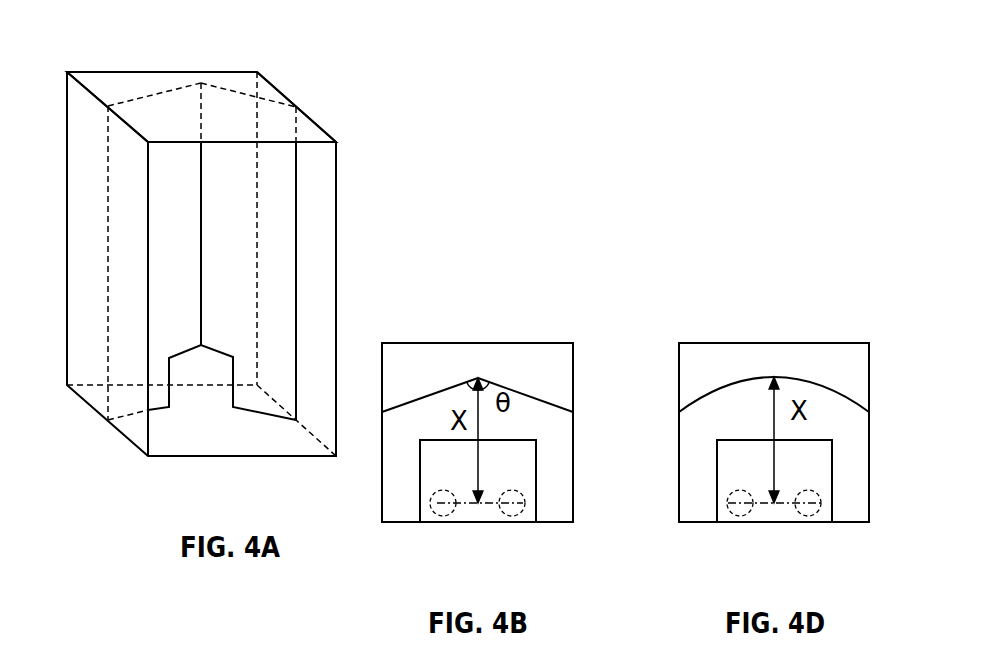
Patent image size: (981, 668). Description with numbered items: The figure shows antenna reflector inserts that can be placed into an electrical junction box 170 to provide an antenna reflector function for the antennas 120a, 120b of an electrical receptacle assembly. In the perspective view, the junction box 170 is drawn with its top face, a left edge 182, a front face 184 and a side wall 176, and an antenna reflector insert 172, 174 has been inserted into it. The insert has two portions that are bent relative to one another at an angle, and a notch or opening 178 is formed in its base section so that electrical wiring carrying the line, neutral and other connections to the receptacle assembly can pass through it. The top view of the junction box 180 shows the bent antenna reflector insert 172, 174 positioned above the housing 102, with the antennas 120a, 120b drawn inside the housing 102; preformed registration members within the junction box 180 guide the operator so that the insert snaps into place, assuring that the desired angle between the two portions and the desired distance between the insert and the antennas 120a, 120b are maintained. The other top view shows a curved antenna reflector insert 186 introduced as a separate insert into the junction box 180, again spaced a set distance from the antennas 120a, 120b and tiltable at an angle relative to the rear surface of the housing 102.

In FIG. 4A, the junction box 170 is at (345, 50).
In FIG. 4A, the antenna reflector insert (first portion) 172 is at (145, 97).
In FIG. 4B, the antenna reflector insert (first portion) 172 is at (435, 388).
In FIG. 4A, the antenna reflector insert (second portion) 174 is at (235, 92).
In FIG. 4B, the antenna reflector insert (second portion) 174 is at (515, 388).
In FIG. 4A, the side wall 176 is at (297, 284).
In FIG. 4A, the notch or opening 178 is at (206, 368).
In FIG. 4A, the junction box 180 is at (120, 72).
In FIG. 4B, the junction box 180 is at (523, 343).
In FIG. 4D, the junction box 180 is at (820, 343).
In FIG. 4A, the left top edge 182 is at (100, 100).
In FIG. 4A, the front face 184 is at (318, 143).
In FIG. 4B, the front face 184 is at (550, 523).
In FIG. 4D, the front face 184 is at (840, 523).
In FIG. 4A, the curved antenna reflector insert 186 is at (315, 118).
In FIG. 4D, the curved antenna reflector insert 186 is at (807, 378).
In FIG. 4B, the housing 102 is at (537, 450).
In FIG. 4D, the housing 102 is at (717, 469).
In FIG. 4B, the antenna 120a is at (438, 515).
In FIG. 4D, the antenna 120a is at (733, 515).
In FIG. 4B, the antenna 120b is at (518, 515).
In FIG. 4D, the antenna 120b is at (815, 515).